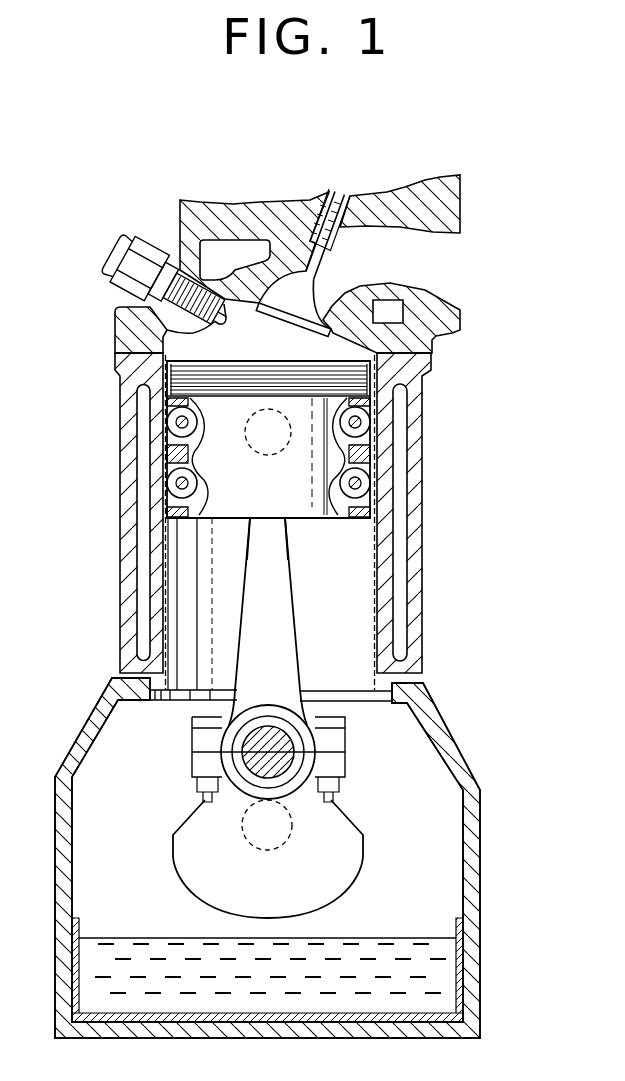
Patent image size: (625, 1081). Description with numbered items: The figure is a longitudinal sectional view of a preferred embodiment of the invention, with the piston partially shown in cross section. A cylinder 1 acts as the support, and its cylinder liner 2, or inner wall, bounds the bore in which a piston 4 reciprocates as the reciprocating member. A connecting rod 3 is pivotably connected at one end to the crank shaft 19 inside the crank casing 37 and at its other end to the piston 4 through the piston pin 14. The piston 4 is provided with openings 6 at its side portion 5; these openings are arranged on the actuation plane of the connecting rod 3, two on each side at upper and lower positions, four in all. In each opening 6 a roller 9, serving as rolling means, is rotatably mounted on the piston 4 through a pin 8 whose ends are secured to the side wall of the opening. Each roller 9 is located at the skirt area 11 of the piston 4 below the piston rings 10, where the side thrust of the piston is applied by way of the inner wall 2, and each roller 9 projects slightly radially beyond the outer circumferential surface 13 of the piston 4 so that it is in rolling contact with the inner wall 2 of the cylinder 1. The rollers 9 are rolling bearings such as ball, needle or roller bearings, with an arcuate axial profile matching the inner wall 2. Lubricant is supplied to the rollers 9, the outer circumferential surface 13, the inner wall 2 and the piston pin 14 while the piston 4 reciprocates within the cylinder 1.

The cylinder 1 is at (157, 396).
The cylinder liner 2 is at (157, 553).
The connecting rod 3 is at (298, 656).
The piston 4 is at (266, 512).
The side portion 5 is at (172, 452).
The openings 6 is at (200, 440).
The pin 8 is at (176, 484).
The roller 9 is at (178, 421).
The piston rings 10 is at (257, 380).
The skirt area 11 is at (240, 510).
The outer circumferential surface 13 is at (360, 458).
The piston pin 14 is at (268, 455).
The crank shaft 19 is at (290, 748).
The crank casing 37 is at (480, 855).